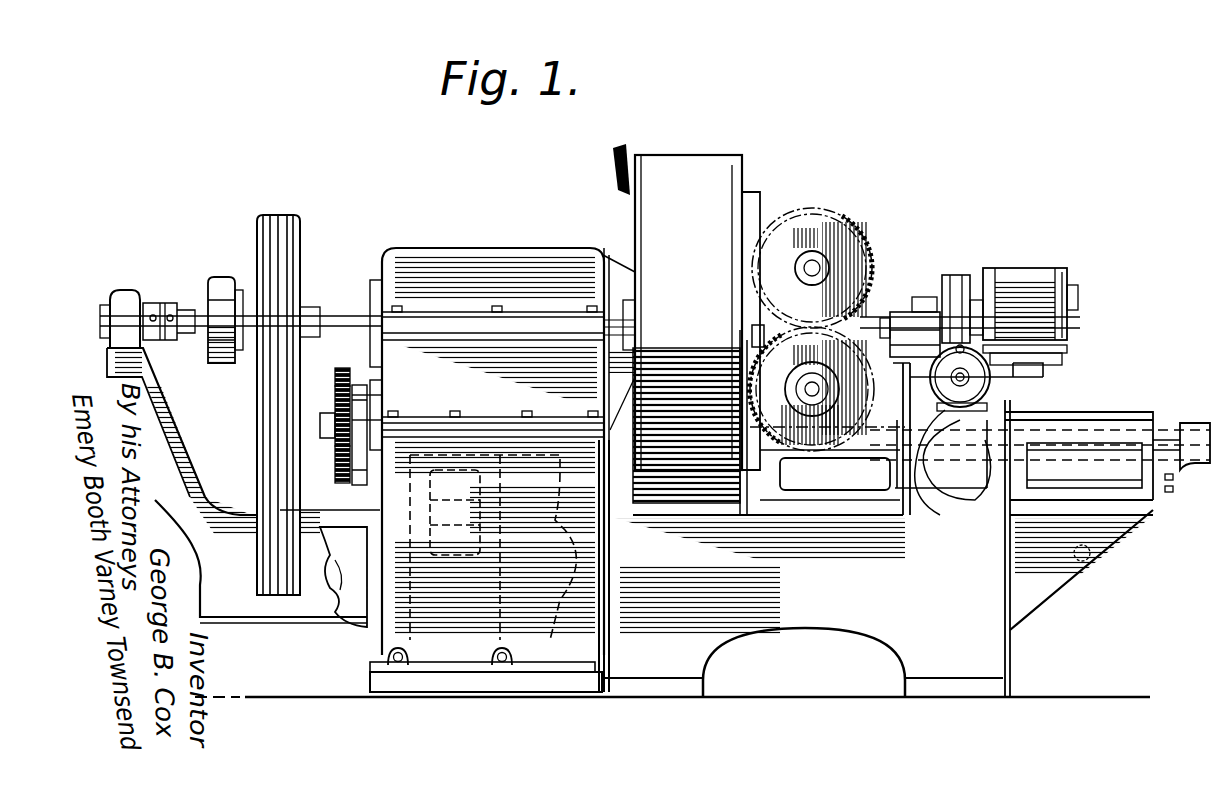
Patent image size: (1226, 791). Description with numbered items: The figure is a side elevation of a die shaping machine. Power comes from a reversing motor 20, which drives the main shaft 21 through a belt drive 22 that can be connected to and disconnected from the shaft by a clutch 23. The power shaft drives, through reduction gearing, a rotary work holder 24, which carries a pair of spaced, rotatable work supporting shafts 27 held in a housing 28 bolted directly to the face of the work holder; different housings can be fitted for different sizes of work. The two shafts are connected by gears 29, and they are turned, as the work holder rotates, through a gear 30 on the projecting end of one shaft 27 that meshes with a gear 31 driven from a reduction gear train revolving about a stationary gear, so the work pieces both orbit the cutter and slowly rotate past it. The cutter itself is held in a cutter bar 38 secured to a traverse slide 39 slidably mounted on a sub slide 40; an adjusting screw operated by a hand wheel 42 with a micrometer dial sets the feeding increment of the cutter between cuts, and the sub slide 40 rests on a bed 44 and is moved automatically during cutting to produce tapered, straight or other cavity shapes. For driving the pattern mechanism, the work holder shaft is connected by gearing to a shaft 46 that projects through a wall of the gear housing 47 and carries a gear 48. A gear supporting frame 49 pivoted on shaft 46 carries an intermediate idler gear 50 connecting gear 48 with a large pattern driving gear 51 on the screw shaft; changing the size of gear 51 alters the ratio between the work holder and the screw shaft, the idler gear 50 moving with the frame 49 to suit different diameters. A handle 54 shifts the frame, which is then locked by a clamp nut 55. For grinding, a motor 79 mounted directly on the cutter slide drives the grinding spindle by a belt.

The reversing motor 20 is at (489, 566).
The main shaft 21 is at (312, 324).
The belt drive 22 is at (282, 258).
The clutch 23 is at (210, 305).
The rotary work holder 24 is at (686, 307).
The work supporting shafts 27 is at (805, 272).
The housing 28 is at (768, 228).
The gears 29 is at (860, 258).
The gear 30 is at (755, 345).
The gear 31 is at (760, 440).
The cutter bar 38 is at (888, 318).
The traverse slide 39 is at (992, 383).
The sub slide 40 is at (1045, 412).
The hand wheel 42 is at (956, 460).
The bed 44 is at (950, 495).
The shaft 46 is at (340, 398).
The gear housing 47 is at (520, 248).
The gear 48 is at (336, 378).
The gear supporting frame 49 is at (340, 420).
The intermediate idler gear 50 is at (324, 426).
The pattern driving gear 51 is at (324, 466).
The handle 54 is at (360, 490).
The clamp nut 55 is at (360, 395).
The motor 79 is at (1030, 272).